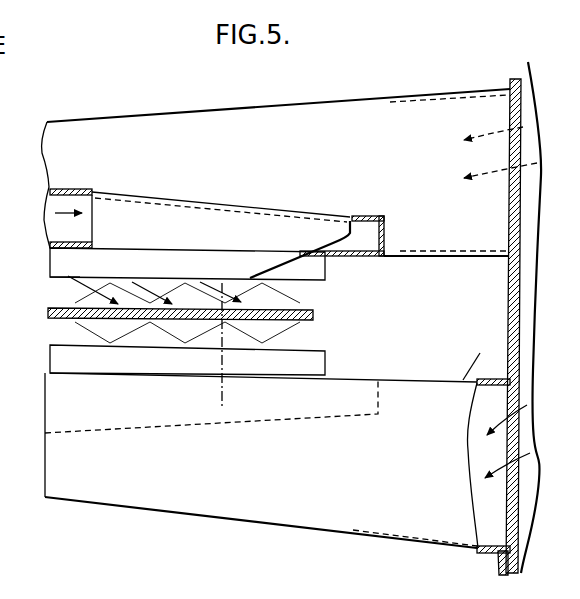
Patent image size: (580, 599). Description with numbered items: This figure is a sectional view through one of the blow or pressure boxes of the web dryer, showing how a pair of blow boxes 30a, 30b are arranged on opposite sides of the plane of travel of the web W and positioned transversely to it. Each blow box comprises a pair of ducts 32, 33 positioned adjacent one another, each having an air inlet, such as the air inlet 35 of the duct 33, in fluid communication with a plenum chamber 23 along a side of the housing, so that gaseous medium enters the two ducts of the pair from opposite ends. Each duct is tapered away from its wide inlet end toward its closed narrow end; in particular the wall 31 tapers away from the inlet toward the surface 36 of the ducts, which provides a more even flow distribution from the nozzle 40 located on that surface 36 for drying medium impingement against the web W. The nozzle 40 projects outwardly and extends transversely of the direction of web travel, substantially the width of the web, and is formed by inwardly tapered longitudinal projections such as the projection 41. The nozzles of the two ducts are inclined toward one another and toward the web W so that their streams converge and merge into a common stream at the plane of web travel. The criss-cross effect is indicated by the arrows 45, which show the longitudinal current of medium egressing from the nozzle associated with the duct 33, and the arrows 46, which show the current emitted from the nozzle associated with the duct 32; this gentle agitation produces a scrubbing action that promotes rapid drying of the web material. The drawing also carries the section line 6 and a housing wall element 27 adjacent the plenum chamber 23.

The plenum chamber 23 is at (519, 112).
The housing wall 27 is at (470, 374).
The blow box 30a is at (95, 435).
The blow box 30b is at (92, 187).
The wall 31 is at (153, 197).
The duct 32 is at (246, 181).
The duct 33 is at (432, 82).
The air inlet 35 is at (507, 252).
The surface 36 is at (372, 258).
The air nozzle 40 is at (50, 262).
The projection 41 is at (68, 268).
The arrows 45 is at (143, 302).
The arrows 46 is at (118, 303).
The web W is at (318, 314).
The section line 6- 6 is at (194, 294).